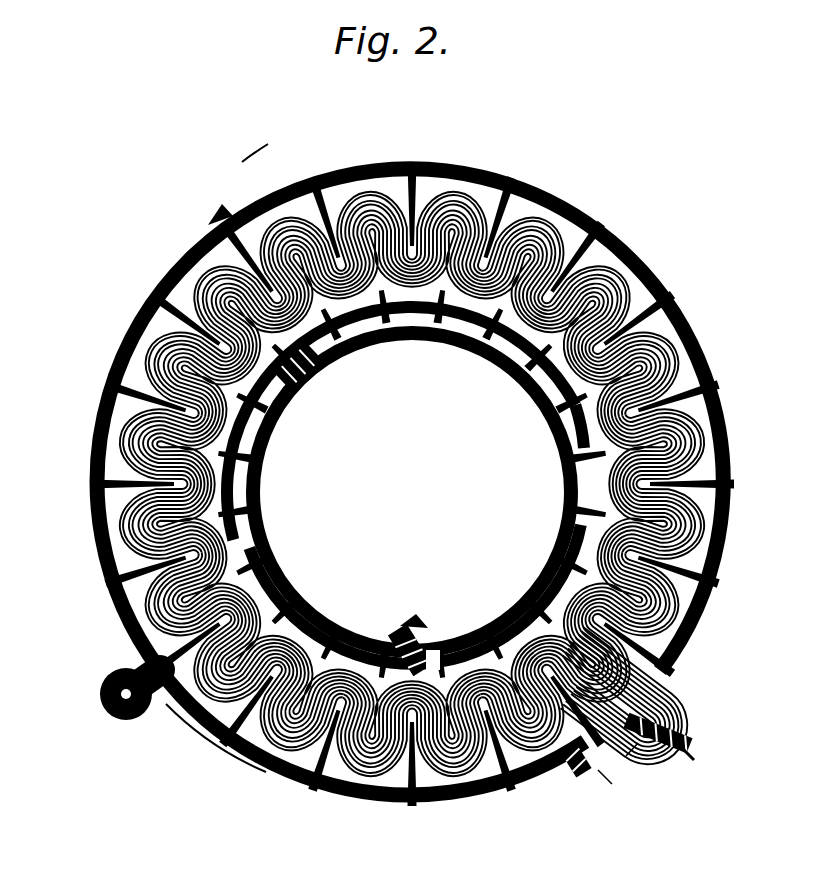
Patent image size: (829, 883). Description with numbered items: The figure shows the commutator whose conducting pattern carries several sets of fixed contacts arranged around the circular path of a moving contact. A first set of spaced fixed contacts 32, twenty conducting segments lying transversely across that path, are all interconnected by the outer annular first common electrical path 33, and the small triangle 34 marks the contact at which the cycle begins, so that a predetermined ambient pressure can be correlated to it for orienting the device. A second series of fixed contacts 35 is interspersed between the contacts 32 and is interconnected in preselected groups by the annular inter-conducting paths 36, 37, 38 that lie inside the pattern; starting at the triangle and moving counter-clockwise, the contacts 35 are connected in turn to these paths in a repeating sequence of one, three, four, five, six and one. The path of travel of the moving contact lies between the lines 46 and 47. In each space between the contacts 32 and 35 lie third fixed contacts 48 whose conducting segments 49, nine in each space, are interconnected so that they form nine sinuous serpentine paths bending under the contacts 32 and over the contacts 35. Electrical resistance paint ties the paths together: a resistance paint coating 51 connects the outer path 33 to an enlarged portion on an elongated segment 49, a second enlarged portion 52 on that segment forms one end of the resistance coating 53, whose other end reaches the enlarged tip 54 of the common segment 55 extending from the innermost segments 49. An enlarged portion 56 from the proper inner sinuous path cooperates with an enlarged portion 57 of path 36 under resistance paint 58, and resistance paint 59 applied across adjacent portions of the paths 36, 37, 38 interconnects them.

The first set of spaced fixed contacts 32 is at (275, 195).
The first common electrical path 33 is at (185, 290).
The small triangle 34 is at (214, 204).
The second series of spaced fixed electrical contacts 35 is at (508, 626).
The annular inter-conducting path 36 is at (246, 510).
The annular inter-conducting path 37 is at (248, 441).
The annular inter-conducting path 38 is at (560, 472).
The line 46 is at (96, 678).
The line 47 is at (250, 160).
The third fixed contacts 48 is at (280, 772).
The conducting segments 49 is at (592, 760).
The electrical resistance paint coating 51 is at (572, 770).
The second enlarged portion 52 is at (684, 736).
The resistance coating 53 is at (680, 748).
The enlarged tip 54 is at (665, 690).
The common segment 55 is at (630, 740).
The enlarged portion 56 is at (416, 640).
The enlarged portion of path 36 57 is at (410, 624).
The resistance paint 58 is at (395, 622).
The resistance paint 59 is at (296, 372).